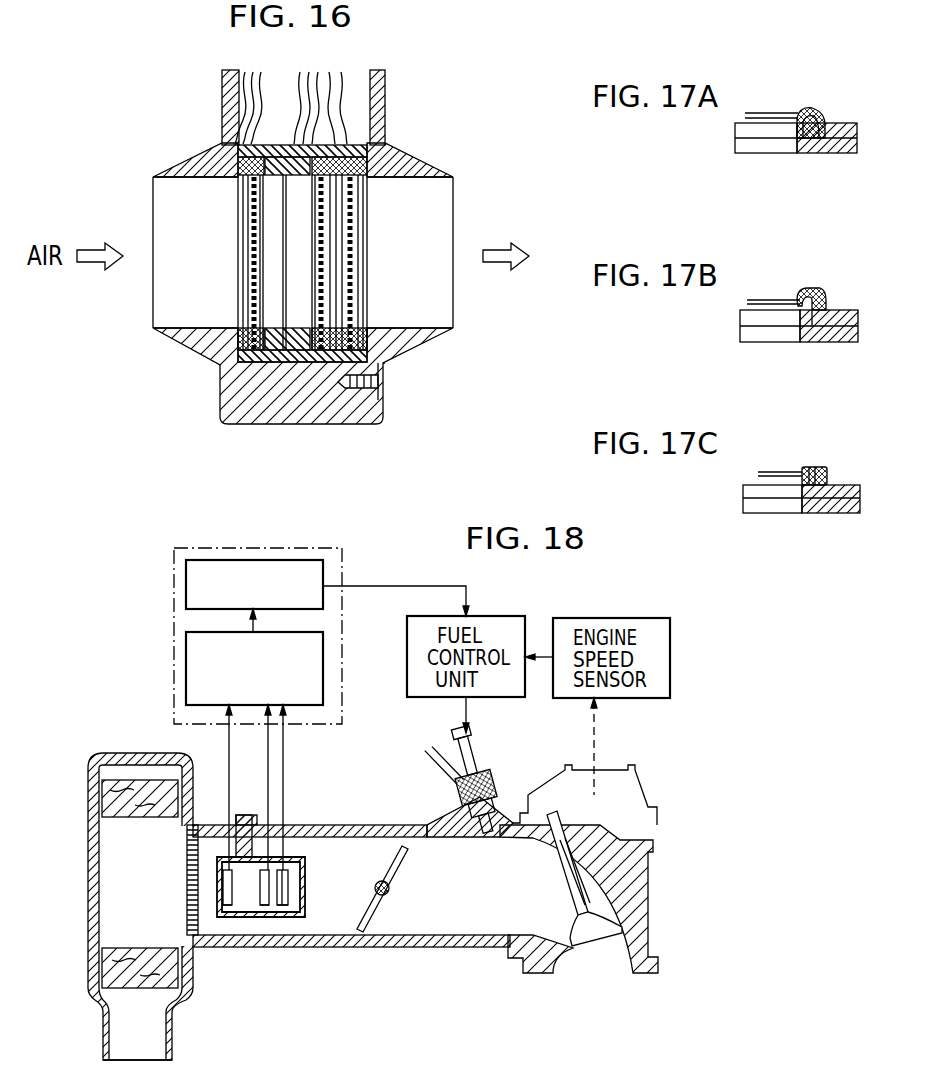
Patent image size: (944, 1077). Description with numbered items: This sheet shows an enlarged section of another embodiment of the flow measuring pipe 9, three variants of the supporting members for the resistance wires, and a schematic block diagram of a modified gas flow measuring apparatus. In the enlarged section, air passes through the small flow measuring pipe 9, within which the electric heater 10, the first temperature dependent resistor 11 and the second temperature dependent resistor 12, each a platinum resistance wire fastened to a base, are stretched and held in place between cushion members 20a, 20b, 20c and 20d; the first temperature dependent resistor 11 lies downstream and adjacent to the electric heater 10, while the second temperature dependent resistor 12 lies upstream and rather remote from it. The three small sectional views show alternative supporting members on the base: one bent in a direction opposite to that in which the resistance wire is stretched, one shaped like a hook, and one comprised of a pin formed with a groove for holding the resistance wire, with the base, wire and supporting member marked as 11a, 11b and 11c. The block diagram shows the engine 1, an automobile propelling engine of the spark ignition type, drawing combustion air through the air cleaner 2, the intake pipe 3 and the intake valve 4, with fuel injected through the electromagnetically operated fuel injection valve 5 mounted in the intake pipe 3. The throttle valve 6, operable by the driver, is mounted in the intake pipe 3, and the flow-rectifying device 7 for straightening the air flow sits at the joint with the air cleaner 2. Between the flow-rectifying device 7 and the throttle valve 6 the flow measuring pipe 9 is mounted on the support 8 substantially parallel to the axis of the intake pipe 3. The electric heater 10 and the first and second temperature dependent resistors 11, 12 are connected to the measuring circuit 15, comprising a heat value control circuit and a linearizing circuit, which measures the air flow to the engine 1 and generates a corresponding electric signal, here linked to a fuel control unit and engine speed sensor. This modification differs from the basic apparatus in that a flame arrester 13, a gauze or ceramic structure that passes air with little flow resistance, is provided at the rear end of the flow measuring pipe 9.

In FIG. 18, the engine 1 is at (658, 826).
In FIG. 18, the air cleaner 2 is at (88, 926).
In FIG. 18, the intake pipe 3 is at (400, 947).
In FIG. 18, the intake valve 4 is at (590, 947).
In FIG. 18, the fuel injection valve 5 is at (491, 811).
In FIG. 18, the throttle valve 6 is at (395, 862).
In FIG. 18, the flow-rectifying device 7 is at (201, 840).
In FIG. 18, the support 8 is at (250, 846).
In FIG. 16, the flow measuring pipe 9 is at (417, 338).
In FIG. 18, the flow measuring pipe 9 is at (262, 905).
In FIG. 16, the electric heater 10 is at (324, 211).
In FIG. 18, the electric heater 10 is at (272, 905).
In FIG. 16, the first temperature dependent resistor 11 is at (351, 297).
In FIG. 18, the first temperature dependent resistor 11 is at (288, 905).
In FIG. 17A, the substrate 11a is at (833, 151).
In FIG. 17B, the substrate 11a is at (838, 342).
In FIG. 17C, the substrate 11a is at (825, 514).
In FIG. 17A, the lead wire 11b is at (765, 117).
In FIG. 17B, the lead wire 11b is at (762, 298).
In FIG. 17C, the lead wire 11b is at (772, 471).
In FIG. 17A, the terminal 11c is at (820, 108).
In FIG. 17B, the terminal 11c is at (824, 292).
In FIG. 17C, the terminal 11c is at (816, 467).
In FIG. 16, the second temperature dependent resistor 12 is at (250, 194).
In FIG. 18, the second temperature dependent resistor 12 is at (225, 902).
In FIG. 18, the flame arrester 13 is at (305, 880).
In FIG. 18, the measuring circuit 15 is at (268, 548).
In FIG. 16, the cushion member 20a is at (383, 143).
In FIG. 16, the cushion member 20b is at (268, 348).
In FIG. 16, the cushion member 20c is at (242, 334).
In FIG. 16, the cushion member 20d is at (372, 343).